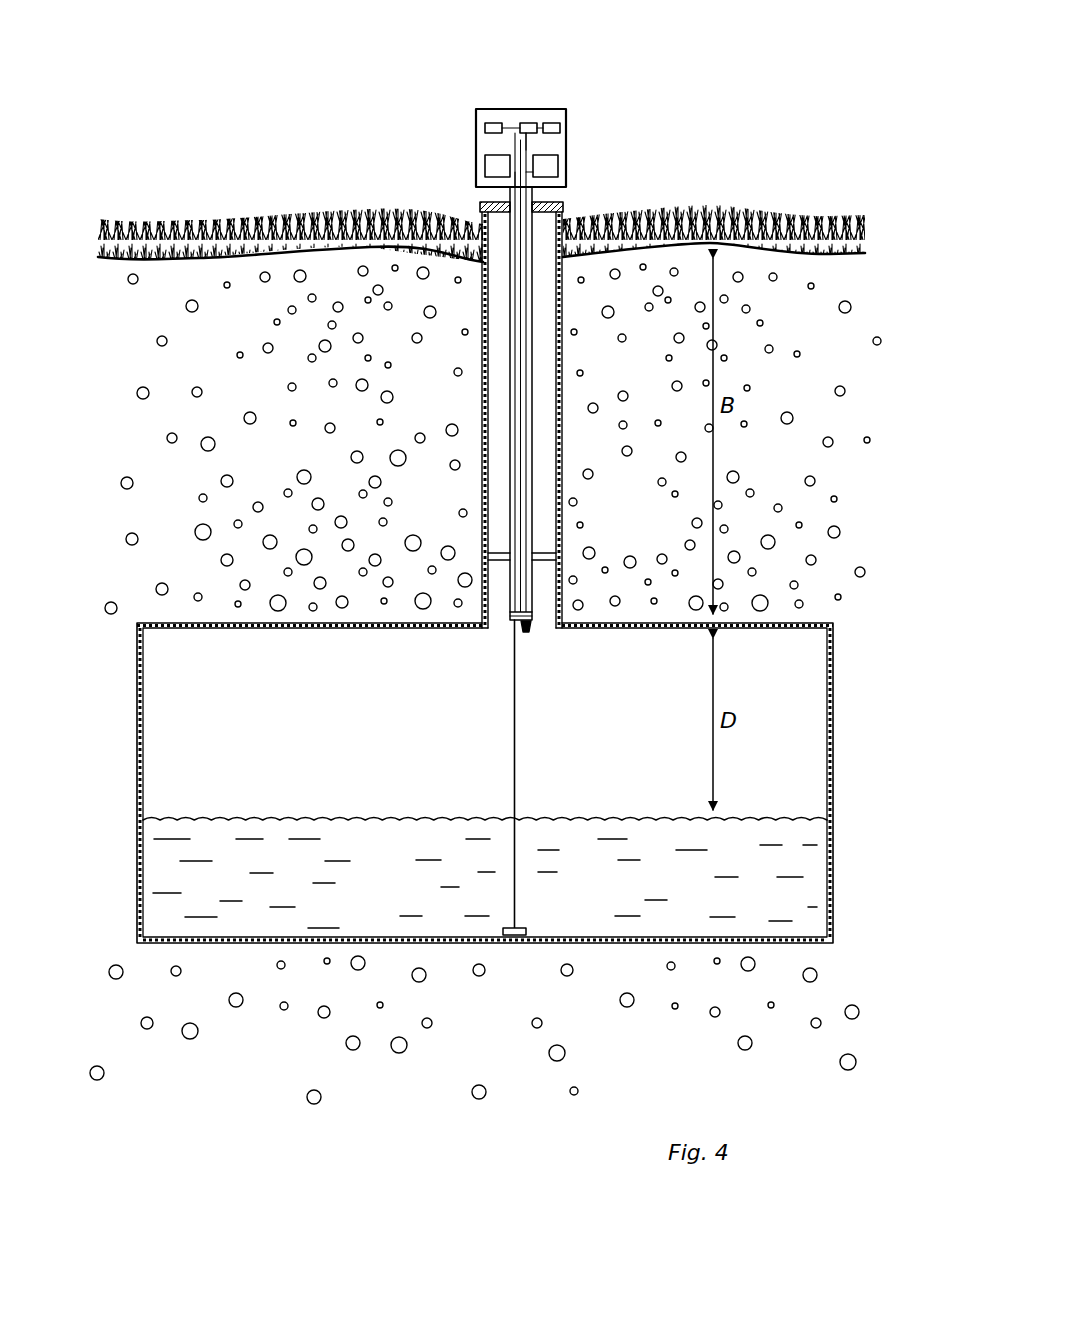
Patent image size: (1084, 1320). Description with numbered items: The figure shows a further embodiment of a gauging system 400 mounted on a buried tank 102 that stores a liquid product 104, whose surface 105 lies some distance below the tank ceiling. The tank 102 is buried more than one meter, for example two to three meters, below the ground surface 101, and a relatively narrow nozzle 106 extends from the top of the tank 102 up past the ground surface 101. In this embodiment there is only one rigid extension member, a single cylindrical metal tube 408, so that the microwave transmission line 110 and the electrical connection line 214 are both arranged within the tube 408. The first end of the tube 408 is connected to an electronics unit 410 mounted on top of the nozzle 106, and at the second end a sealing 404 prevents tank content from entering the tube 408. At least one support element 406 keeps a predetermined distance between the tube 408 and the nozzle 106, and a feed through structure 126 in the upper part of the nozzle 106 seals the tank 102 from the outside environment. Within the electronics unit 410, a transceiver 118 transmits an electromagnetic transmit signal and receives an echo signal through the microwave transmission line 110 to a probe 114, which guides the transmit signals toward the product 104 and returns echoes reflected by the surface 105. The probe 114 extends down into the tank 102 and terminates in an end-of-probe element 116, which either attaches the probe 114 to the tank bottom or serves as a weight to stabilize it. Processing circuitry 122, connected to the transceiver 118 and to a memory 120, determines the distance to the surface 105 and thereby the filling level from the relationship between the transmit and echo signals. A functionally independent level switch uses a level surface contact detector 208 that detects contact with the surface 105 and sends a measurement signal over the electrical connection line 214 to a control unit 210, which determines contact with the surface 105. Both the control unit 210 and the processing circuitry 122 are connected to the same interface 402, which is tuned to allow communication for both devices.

The gauging system 400 is at (612, 105).
The ground surface 101 is at (690, 215).
The tank 102 is at (607, 623).
The liquid product 104 is at (437, 912).
The surface 105 is at (330, 818).
The nozzle 106 is at (562, 345).
The microwave transmission line 110 is at (510, 425).
The probe 114 is at (516, 757).
The end-of-probe element 116 is at (528, 928).
The transceiver 118 is at (485, 163).
The memory 120 is at (485, 128).
The processing circuitry 122 is at (529, 123).
The feed through structure 126 is at (480, 205).
The level surface contact detector 208 is at (531, 632).
The control unit 210 is at (566, 170).
The electrical connection line 214 is at (526, 430).
The interface 402 is at (552, 123).
The sealing 404 is at (512, 628).
The support element 406 is at (490, 555).
The cylindrical metal tube 408 is at (508, 345).
The electronics unit 410 is at (566, 160).